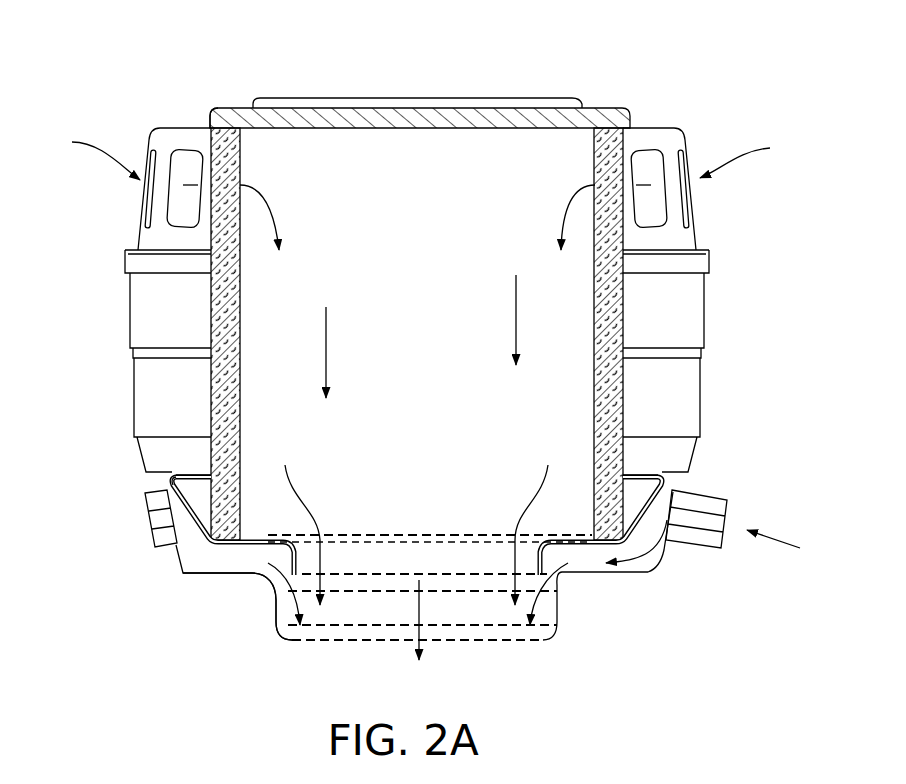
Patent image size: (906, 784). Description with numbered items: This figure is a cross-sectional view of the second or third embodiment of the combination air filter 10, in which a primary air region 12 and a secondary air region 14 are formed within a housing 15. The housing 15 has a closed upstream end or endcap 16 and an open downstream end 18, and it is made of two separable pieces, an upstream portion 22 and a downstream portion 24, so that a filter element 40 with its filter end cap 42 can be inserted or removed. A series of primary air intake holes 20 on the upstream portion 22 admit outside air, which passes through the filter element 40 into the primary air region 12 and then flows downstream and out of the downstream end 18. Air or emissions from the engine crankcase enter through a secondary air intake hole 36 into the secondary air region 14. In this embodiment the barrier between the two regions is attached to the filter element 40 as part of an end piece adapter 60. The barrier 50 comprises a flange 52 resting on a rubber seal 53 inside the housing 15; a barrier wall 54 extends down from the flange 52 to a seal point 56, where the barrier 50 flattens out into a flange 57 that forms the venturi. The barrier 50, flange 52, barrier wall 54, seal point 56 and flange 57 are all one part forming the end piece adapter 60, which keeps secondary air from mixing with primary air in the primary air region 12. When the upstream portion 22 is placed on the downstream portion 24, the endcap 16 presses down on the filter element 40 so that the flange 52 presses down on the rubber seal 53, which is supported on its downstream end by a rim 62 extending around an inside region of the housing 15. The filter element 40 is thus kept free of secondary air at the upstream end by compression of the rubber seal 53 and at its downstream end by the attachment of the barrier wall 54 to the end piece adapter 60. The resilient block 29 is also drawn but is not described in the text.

The combination air filter 10 is at (693, 108).
The primary air region 12 is at (479, 170).
The secondary air region 14 is at (651, 566).
The housing 15 is at (713, 357).
The endcap 16 is at (403, 98).
The downstream end 18 is at (320, 647).
The primary air intake holes 20 is at (175, 224).
The upstream portion 22 is at (698, 240).
The downstream portion 24 is at (700, 415).
The left resilient block 29 is at (145, 500).
The secondary air intake hole 36 is at (725, 500).
The filter element 40 is at (212, 108).
The filter end cap 42 is at (252, 108).
The barrier 50 is at (160, 488).
The flange 52 is at (150, 470).
The rubber seal 53 is at (150, 478).
The barrier wall 54 is at (178, 547).
The seal point 56 is at (200, 513).
The flange 57 is at (255, 545).
The end piece adapter 60 is at (578, 548).
The rim 62 is at (690, 490).